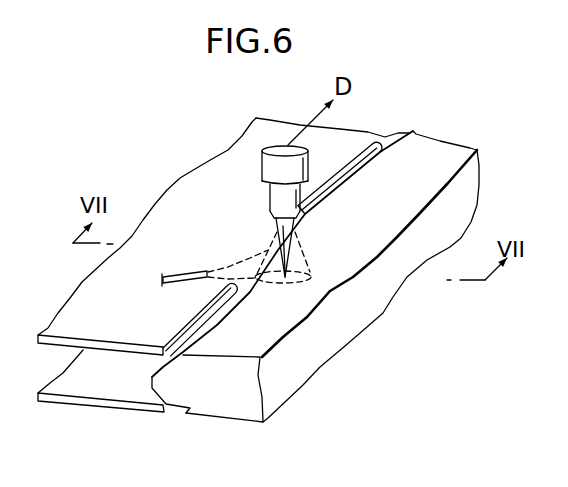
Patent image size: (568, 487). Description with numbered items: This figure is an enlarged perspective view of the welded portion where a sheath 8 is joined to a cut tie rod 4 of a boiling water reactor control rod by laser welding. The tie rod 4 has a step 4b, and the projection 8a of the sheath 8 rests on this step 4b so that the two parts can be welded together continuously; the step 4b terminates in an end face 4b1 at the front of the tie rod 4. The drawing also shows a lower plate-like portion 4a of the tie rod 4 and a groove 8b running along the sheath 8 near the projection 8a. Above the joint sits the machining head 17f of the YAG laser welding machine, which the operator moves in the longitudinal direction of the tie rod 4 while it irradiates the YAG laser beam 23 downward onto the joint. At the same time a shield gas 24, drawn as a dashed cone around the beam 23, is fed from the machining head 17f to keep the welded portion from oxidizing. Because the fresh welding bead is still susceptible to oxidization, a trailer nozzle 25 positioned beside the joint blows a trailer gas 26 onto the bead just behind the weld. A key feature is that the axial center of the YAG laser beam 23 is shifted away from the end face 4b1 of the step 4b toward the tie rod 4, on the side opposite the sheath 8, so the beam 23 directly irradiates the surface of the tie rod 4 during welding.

The tie rod 4 is at (308, 353).
The lower plate 4a is at (102, 401).
The step 4b is at (221, 319).
The end face 4b1 is at (183, 415).
The sheath 8 is at (180, 180).
The projection 8a is at (380, 141).
The groove of upper plate 8b is at (340, 168).
The machining head 17f is at (270, 166).
The YAG laser beam 23 is at (277, 242).
The shield gas 24 is at (312, 257).
The trailer nozzle 25 is at (182, 283).
The trailer gas 26 is at (217, 257).